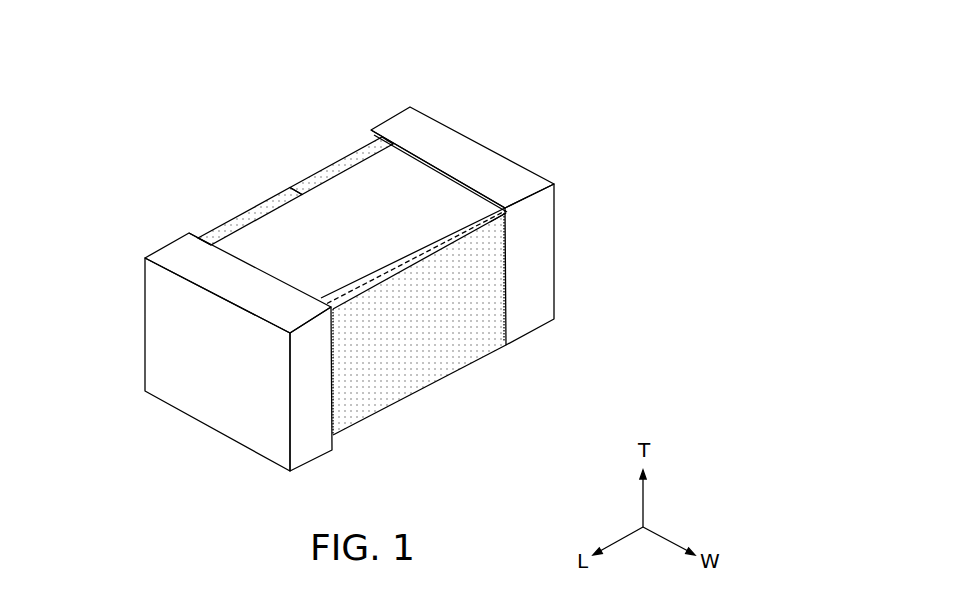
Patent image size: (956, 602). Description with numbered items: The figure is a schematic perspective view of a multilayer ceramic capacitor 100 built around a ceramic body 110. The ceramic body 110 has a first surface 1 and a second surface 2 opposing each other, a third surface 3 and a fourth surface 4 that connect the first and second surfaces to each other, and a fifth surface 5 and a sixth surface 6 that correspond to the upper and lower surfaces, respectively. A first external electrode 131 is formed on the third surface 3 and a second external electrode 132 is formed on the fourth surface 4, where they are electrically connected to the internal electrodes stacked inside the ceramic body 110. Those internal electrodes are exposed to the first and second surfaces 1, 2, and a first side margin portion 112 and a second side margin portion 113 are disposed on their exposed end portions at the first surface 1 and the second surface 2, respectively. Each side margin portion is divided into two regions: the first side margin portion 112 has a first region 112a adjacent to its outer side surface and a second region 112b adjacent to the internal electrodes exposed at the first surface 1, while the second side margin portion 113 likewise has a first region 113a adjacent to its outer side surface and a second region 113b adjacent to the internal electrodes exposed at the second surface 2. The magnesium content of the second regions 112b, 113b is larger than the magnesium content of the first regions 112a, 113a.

The multilayer ceramic capacitor 100 is at (120, 49).
The ceramic body 110 is at (328, 198).
The first surface 1 is at (280, 214).
The second surface 2 is at (494, 293).
The third surface 3 is at (169, 339).
The fourth surface 4 is at (461, 139).
The fifth surface 5 is at (370, 176).
The sixth surface 6 is at (391, 378).
The first side margin portion 112 is at (218, 143).
The first region of first side margin portion 112a is at (245, 217).
The second region of first side margin portion 112b is at (218, 238).
The second side margin portion 113 is at (620, 92).
The first region of second side margin portion 113a is at (503, 212).
The second region of second side margin portion 113b is at (465, 214).
The first external electrode 131 is at (177, 247).
The second external electrode 132 is at (415, 122).